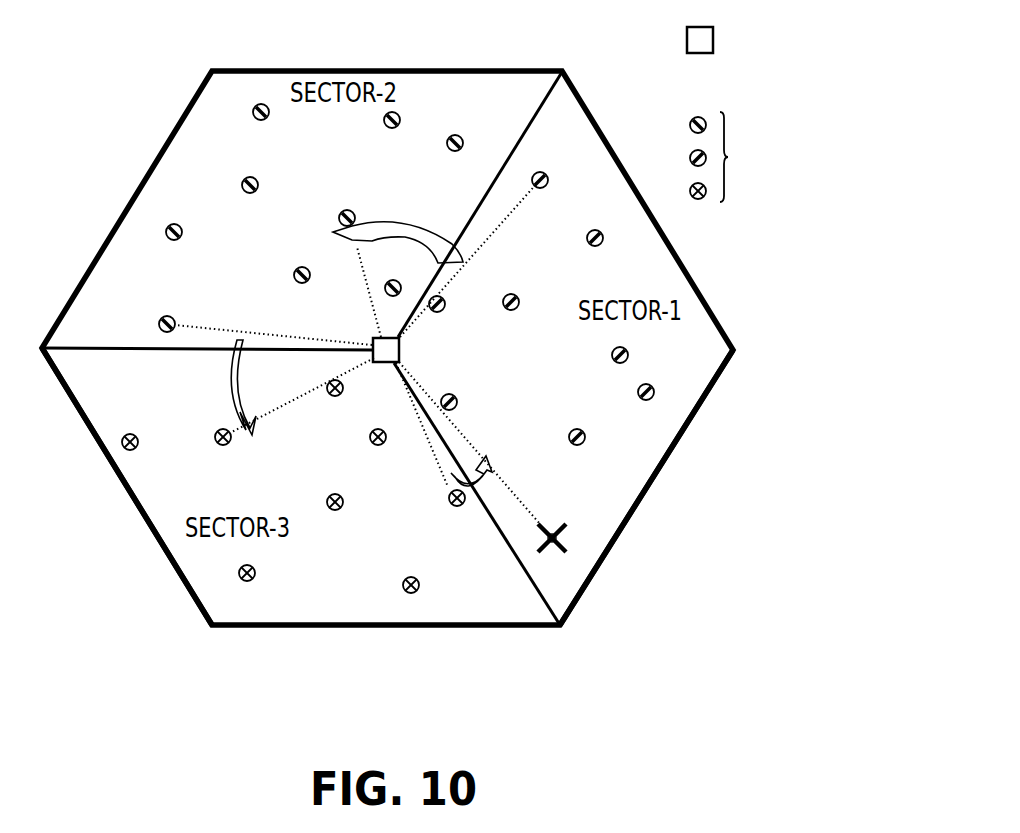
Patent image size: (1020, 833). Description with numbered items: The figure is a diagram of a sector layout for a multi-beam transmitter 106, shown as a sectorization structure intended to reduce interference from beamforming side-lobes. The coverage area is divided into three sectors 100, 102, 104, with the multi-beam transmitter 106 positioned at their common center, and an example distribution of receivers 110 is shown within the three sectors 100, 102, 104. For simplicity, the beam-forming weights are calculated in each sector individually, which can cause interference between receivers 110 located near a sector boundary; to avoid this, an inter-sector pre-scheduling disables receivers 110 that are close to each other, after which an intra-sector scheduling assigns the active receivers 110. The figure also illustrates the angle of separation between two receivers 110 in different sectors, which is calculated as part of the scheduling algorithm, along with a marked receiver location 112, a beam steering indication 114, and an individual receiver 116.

The sector 100 is at (135, 185).
The sector 102 is at (168, 567).
The sector 104 is at (693, 425).
The multi-beam transmitter 106 is at (628, 181).
The receivers 110 is at (487, 348).
The target receiver location 112 is at (551, 532).
The beam steering arrow 114 is at (452, 501).
The receiver 116 is at (445, 310).